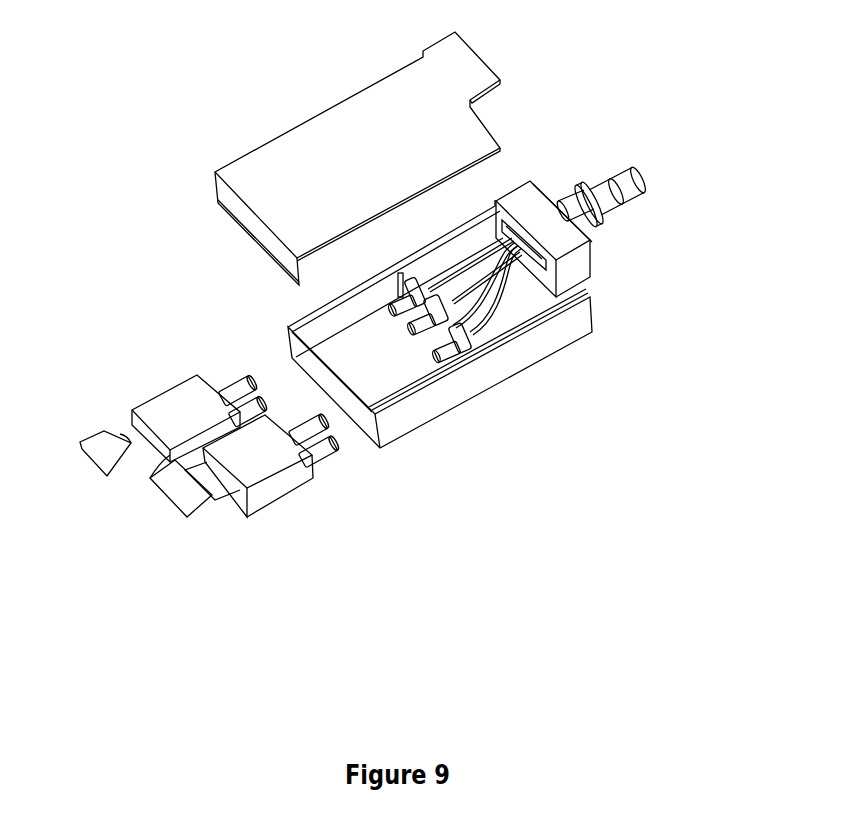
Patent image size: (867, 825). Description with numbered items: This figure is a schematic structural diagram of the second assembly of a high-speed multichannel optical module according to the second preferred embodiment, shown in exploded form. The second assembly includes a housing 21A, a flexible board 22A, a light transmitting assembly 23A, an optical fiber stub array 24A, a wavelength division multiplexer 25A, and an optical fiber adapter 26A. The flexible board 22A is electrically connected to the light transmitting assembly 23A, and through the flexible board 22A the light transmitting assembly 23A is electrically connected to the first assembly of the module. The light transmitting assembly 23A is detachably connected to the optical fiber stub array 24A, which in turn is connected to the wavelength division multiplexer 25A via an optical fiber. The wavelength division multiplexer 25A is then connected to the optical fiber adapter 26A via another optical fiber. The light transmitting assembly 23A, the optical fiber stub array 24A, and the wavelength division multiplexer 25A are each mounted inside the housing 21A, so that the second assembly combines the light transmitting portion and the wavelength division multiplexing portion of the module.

The housing 21A is at (335, 143).
The flexible board 22A is at (132, 485).
The light transmitting assembly 23A is at (262, 458).
The optical fiber stub array 24A is at (477, 360).
The wavelength division multiplexer 25A is at (550, 257).
The optical fiber adapter 26A is at (612, 167).